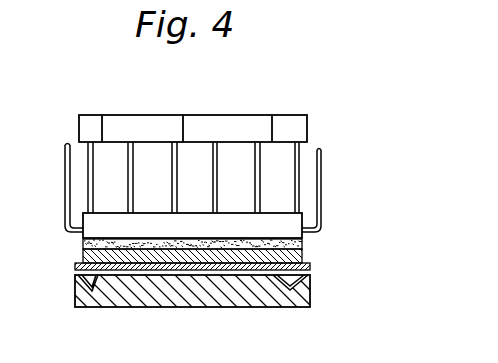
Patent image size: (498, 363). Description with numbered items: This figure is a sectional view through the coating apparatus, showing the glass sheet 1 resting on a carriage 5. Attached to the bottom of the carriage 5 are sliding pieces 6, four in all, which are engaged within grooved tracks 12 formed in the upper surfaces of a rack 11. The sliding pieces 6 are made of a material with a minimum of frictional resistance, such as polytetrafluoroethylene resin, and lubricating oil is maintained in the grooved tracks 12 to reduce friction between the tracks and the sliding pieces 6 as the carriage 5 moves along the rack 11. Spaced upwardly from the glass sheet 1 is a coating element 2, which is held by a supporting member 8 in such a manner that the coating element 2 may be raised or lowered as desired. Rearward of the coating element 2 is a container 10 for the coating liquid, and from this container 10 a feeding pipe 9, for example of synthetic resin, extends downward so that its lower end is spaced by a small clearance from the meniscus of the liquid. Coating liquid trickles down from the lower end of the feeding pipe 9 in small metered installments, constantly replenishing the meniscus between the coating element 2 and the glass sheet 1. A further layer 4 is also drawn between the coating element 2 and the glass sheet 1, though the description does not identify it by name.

The glass sheet 1 is at (310, 256).
The coating element 2 is at (303, 224).
The bonding layer 4 is at (303, 246).
The carriage 5 is at (75, 265).
The sliding pieces 6 is at (76, 287).
The supporting member 8 is at (65, 182).
The feeding pipe 9 is at (94, 183).
The container 10 is at (232, 124).
The rack 11 is at (268, 308).
The grooved tracks 12 is at (98, 306).